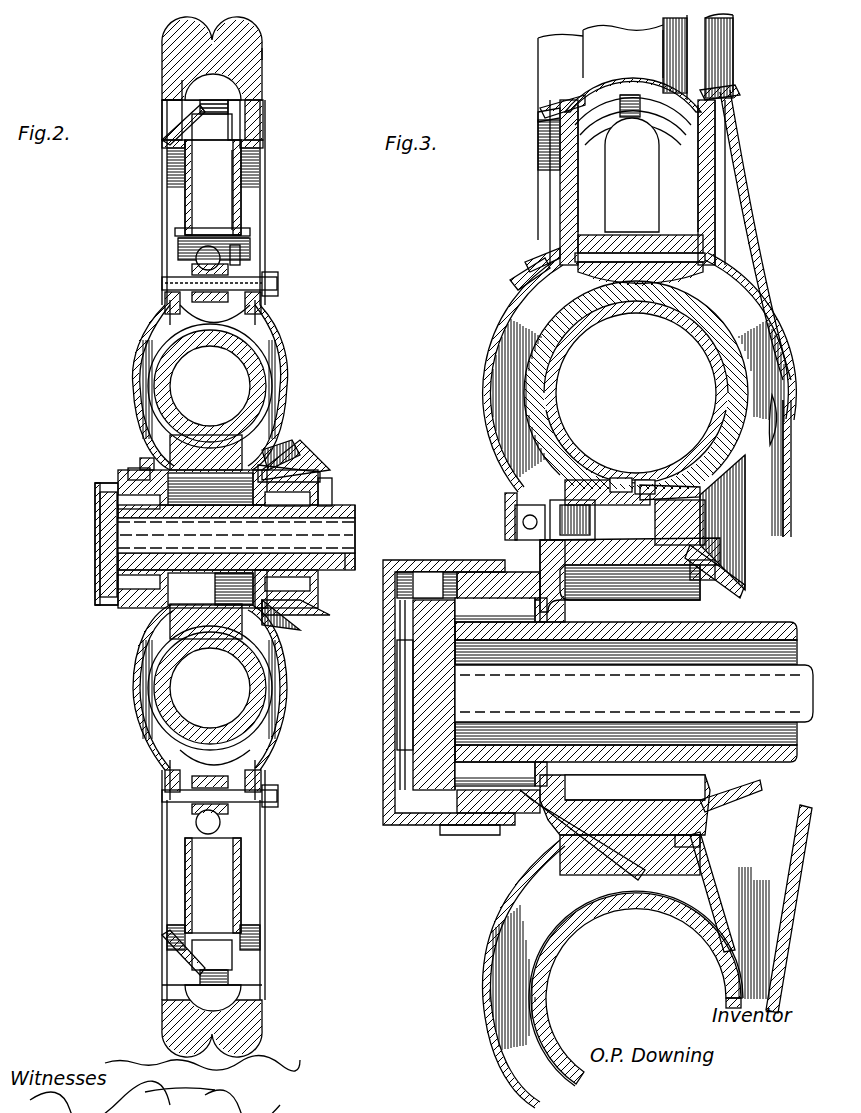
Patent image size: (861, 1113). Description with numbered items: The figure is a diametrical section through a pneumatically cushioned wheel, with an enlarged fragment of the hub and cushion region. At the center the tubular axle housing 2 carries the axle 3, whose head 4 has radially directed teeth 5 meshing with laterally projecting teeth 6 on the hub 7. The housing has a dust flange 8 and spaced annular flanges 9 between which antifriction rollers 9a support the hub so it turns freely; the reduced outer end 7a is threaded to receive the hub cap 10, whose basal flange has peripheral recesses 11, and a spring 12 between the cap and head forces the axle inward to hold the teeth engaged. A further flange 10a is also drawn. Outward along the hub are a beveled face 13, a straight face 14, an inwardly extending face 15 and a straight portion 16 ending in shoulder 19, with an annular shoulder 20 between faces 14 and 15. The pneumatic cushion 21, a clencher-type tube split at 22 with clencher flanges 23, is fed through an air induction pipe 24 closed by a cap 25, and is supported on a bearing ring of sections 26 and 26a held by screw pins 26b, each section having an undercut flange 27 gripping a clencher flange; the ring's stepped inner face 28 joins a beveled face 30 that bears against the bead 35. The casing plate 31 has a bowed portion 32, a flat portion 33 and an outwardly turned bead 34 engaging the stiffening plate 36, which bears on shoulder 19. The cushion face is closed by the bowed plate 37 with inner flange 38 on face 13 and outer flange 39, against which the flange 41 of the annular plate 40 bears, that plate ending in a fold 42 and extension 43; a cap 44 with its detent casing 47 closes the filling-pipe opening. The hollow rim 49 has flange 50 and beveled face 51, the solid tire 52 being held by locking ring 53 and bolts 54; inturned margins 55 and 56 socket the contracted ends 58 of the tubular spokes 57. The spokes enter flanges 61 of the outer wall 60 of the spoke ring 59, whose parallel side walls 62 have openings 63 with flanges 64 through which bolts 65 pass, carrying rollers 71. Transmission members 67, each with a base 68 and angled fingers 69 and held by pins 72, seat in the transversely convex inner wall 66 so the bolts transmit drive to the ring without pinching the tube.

In FIG. 3, the tubular axle housing 2 is at (640, 630).
In FIG. 2, the axle 3 is at (236, 537).
In FIG. 3, the axle 3 is at (634, 693).
In FIG. 2, the head 4 is at (100, 545).
In FIG. 3, the head 4 is at (425, 690).
In FIG. 2, the radially directed teeth 5 is at (98, 585).
In FIG. 3, the radially directed teeth 5 is at (415, 808).
In FIG. 2, the laterally projecting teeth 6 is at (110, 485).
In FIG. 3, the laterally projecting teeth 6 is at (430, 575).
In FIG. 2, the hub 7 is at (210, 491).
In FIG. 3, the hub 7 is at (610, 572).
In FIG. 2, the reduced outer end of the hub 7a is at (150, 470).
In FIG. 3, the reduced outer end of the hub 7a is at (475, 575).
In FIG. 2, the dust flange 8 is at (312, 499).
In FIG. 2, the spaced annular flanges 9 is at (226, 489).
In FIG. 3, the spaced annular flanges 9 is at (548, 612).
In FIG. 2, the antifriction rollers 9a is at (312, 516).
In FIG. 3, the antifriction rollers 9a is at (455, 540).
In FIG. 2, the hub cap 10 is at (122, 496).
In FIG. 3, the hub cap 10 is at (404, 575).
In FIG. 2, the flange 10a is at (300, 592).
In FIG. 3, the peripheral circular recesses 11 is at (470, 830).
In FIG. 3, the spring 12 is at (400, 700).
In FIG. 3, the beveled annular face 13 is at (575, 578).
In FIG. 3, the transversely straight face 14 is at (632, 585).
In FIG. 2, the inwardly extending annular face 15 is at (278, 453).
In FIG. 3, the inwardly extending annular face 15 is at (740, 588).
In FIG. 2, the straight portion 16 is at (275, 472).
In FIG. 2, the small flange or shoulder 19 is at (325, 482).
In FIG. 2, the annular shoulder 20 is at (282, 438).
In FIG. 3, the annular shoulder 20 is at (708, 512).
In FIG. 2, the pneumatic cushion 21 is at (268, 378).
In FIG. 3, the pneumatic cushion 21 is at (716, 364).
In FIG. 2, the split 22 is at (212, 440).
In FIG. 3, the split 22 is at (640, 908).
In FIG. 3, the clencher flanges 23 is at (660, 480).
In FIG. 3, the air induction pipe 24 is at (604, 480).
In FIG. 2, the cap 25 is at (234, 589).
In FIG. 3, the cap 25 is at (558, 518).
In FIG. 2, the bearing ring section 26 is at (218, 589).
In FIG. 3, the bearing ring section 26 is at (610, 915).
In FIG. 2, the bearing ring section 26a is at (266, 614).
In FIG. 3, the bearing ring section 26a is at (702, 832).
In FIG. 3, the screw pins or bolts 26b is at (560, 880).
In FIG. 2, the undercut lateral flange 27 is at (168, 630).
In FIG. 3, the undercut lateral flange 27 is at (705, 490).
In FIG. 3, the flat face 28 is at (642, 830).
In FIG. 3, the curved or beveled face 30 is at (672, 838).
In FIG. 2, the annular casing plate 31 is at (262, 762).
In FIG. 3, the annular casing plate 31 is at (786, 385).
In FIG. 2, the concavo-convex portion 32 is at (272, 700).
In FIG. 3, the concavo-convex portion 32 is at (780, 432).
In FIG. 2, the annular flat portion 33 is at (266, 792).
In FIG. 3, the annular flat portion 33 is at (727, 205).
In FIG. 2, the outwardly turned bead 34 is at (260, 830).
In FIG. 3, the outwardly turned bead 34 is at (742, 92).
In FIG. 3, the open bead 35 is at (695, 580).
In FIG. 2, the stiffening or bracing plate 36 is at (272, 330).
In FIG. 3, the stiffening or bracing plate 36 is at (760, 292).
In FIG. 2, the annular plate 37 is at (140, 725).
In FIG. 3, the annular plate 37 is at (483, 385).
In FIG. 2, the flange 38 is at (150, 465).
In FIG. 3, the flange 38 is at (560, 815).
In FIG. 2, the circumferential flange 39 is at (178, 322).
In FIG. 3, the circumferential flange 39 is at (530, 255).
In FIG. 2, the annular plate 40 is at (170, 306).
In FIG. 3, the annular plate 40 is at (560, 210).
In FIG. 2, the flange 41 is at (165, 780).
In FIG. 3, the flange 41 is at (545, 242).
In FIG. 2, the fold 42 is at (192, 266).
In FIG. 3, the fold 42 is at (548, 115).
In FIG. 3, the extended portion 43 is at (560, 100).
In FIG. 3, the cap 44 is at (508, 500).
In FIG. 3, the tubular casing 47 is at (515, 516).
In FIG. 2, the rim 49 is at (262, 128).
In FIG. 2, the flange 50 is at (240, 100).
In FIG. 2, the beveled face 51 is at (162, 120).
In FIG. 2, the tire 52 is at (262, 32).
In FIG. 2, the locking ring 53 is at (170, 95).
In FIG. 2, the bolts 54 is at (180, 130).
In FIG. 2, the inwardly turned margins 55 is at (262, 58).
In FIG. 2, the inwardly turned margins 56 is at (262, 142).
In FIG. 2, the spokes 57 is at (243, 195).
In FIG. 3, the spokes 57 is at (623, 51).
In FIG. 2, the contracted upper end 58 is at (262, 110).
In FIG. 2, the spoke ring 59 is at (246, 243).
In FIG. 3, the spoke ring 59 is at (698, 180).
In FIG. 2, the outer wall 60 is at (240, 232).
In FIG. 3, the outer wall 60 is at (652, 92).
In FIG. 2, the outwardly bent flange 61 is at (178, 230).
In FIG. 3, the side walls 62 is at (595, 185).
In FIG. 2, the openings 63 is at (165, 300).
In FIG. 2, the inwardly turned flange 64 is at (178, 246).
In FIG. 2, the bolts 65 is at (180, 283).
In FIG. 3, the inner wall 66 is at (668, 310).
In FIG. 2, the transmission member 67 is at (210, 386).
In FIG. 3, the transmission member 67 is at (610, 240).
In FIG. 3, the base 68 is at (588, 305).
In FIG. 2, the fingers or abutments 69 is at (208, 246).
In FIG. 3, the fingers or abutments 69 is at (632, 175).
In FIG. 2, the roller 71 is at (240, 262).
In FIG. 3, the transverse pins 72 is at (708, 260).